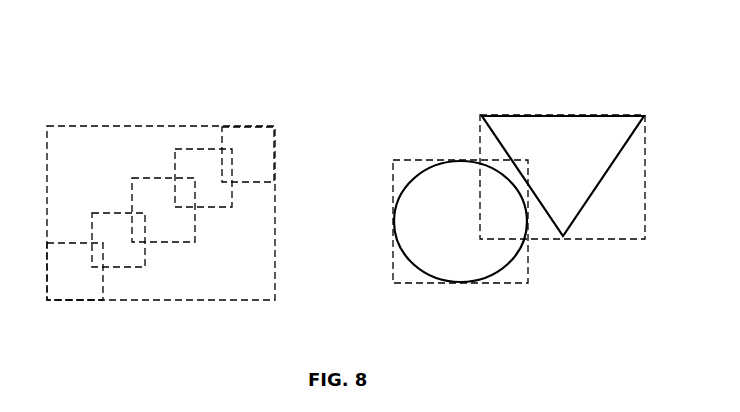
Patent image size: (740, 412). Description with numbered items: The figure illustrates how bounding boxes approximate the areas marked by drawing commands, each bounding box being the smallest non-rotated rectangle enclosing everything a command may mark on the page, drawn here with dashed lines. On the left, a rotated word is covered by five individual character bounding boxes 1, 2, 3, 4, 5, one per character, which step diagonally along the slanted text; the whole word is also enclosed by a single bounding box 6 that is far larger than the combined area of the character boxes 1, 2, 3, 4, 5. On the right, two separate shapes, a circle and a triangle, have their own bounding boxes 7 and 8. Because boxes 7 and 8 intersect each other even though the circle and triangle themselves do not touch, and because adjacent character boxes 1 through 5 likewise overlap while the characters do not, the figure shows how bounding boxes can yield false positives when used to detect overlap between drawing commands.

The bounding box 1 is at (76, 241).
The bounding box 2 is at (118, 211).
The bounding box 3 is at (164, 176).
The bounding box 4 is at (204, 147).
The bounding box 5 is at (249, 124).
The bounding box 6 is at (278, 213).
The bounding box 7 is at (462, 286).
The bounding box 8 is at (563, 242).